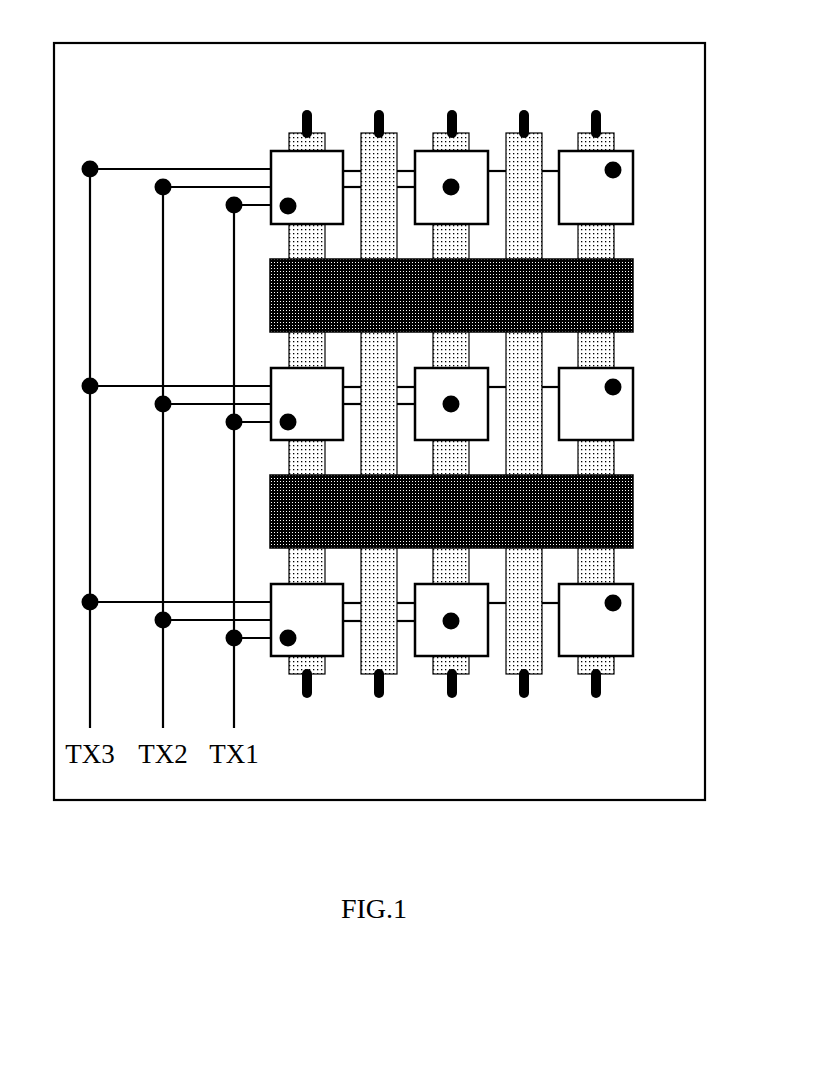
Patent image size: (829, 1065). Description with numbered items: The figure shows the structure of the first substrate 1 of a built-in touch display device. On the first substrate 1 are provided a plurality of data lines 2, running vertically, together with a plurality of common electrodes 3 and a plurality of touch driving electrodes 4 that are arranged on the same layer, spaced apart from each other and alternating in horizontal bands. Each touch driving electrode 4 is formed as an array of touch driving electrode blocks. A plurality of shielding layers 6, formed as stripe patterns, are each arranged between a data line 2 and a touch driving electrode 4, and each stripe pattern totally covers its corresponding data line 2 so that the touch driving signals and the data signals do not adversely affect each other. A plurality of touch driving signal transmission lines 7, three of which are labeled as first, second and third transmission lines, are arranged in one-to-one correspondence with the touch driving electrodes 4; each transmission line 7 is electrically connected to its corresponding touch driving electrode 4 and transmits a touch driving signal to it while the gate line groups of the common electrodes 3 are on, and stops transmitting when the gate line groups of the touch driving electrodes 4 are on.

The first substrate 1 is at (487, 43).
The data line 2 is at (452, 110).
The common electrode 3 is at (633, 275).
The touch driving electrode 4 is at (633, 177).
The shielding layer 6 is at (537, 133).
The touch driving signal transmission line 7 is at (133, 169).